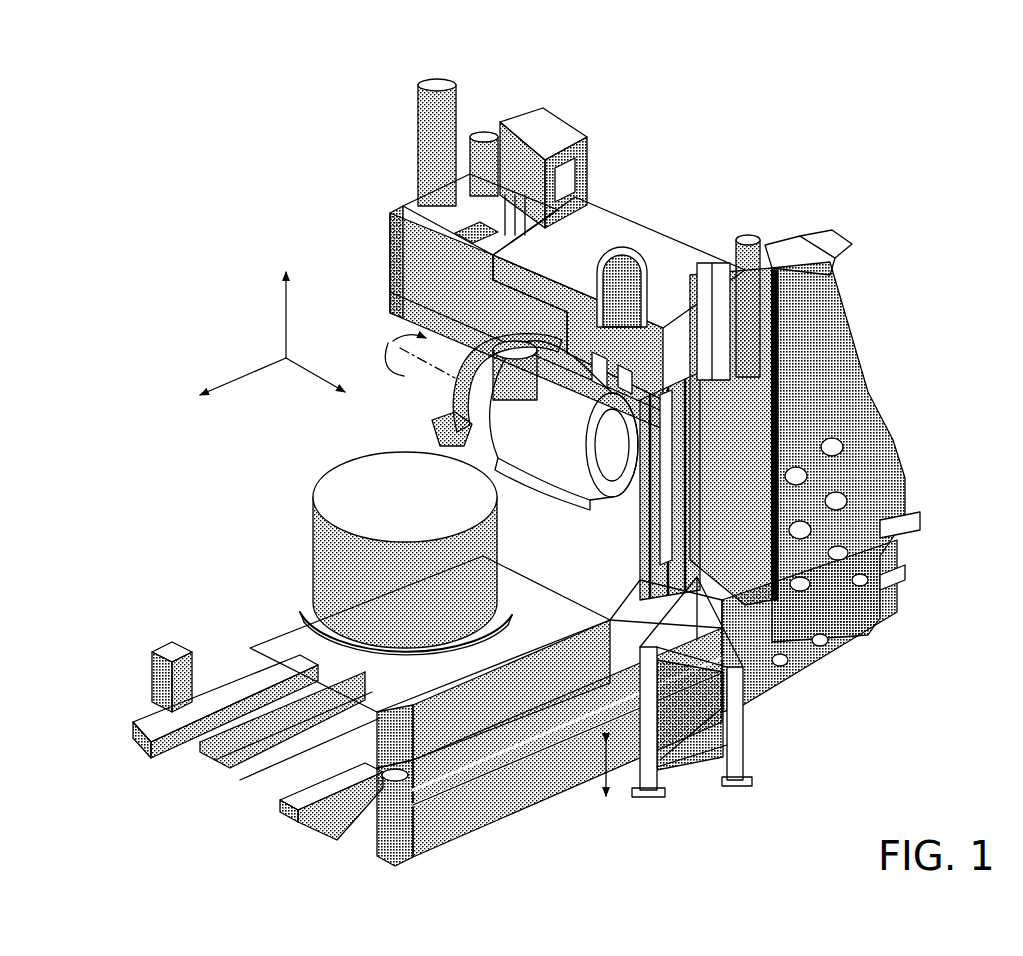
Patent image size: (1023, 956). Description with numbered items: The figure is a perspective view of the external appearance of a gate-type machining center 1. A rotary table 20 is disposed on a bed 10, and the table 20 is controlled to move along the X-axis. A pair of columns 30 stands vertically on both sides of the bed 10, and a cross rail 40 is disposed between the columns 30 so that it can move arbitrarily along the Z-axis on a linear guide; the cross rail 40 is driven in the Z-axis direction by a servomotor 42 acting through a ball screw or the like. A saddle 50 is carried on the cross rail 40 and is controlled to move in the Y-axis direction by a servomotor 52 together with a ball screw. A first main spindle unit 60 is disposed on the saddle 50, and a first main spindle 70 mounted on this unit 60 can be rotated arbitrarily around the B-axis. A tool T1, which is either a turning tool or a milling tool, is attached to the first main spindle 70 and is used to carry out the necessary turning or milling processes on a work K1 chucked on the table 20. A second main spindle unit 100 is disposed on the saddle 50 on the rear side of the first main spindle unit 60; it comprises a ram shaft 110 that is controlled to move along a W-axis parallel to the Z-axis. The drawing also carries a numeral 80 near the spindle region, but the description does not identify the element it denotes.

The machining center 1 is at (843, 96).
The bed 10 is at (487, 720).
The rotary table 20 is at (338, 622).
The columns 30 is at (580, 165).
The cross rail 40 is at (392, 207).
The servomotor 42 is at (480, 128).
The saddle 50 is at (540, 258).
The servomotor 52 is at (778, 410).
The first main spindle unit 60 is at (597, 420).
The first main spindle 70 is at (497, 402).
The B-axis pivot housing 80 is at (468, 342).
The second main spindle unit 100 is at (692, 515).
The ram shaft 110 is at (695, 562).
The work K1 is at (330, 505).
The tool T1 is at (440, 443).